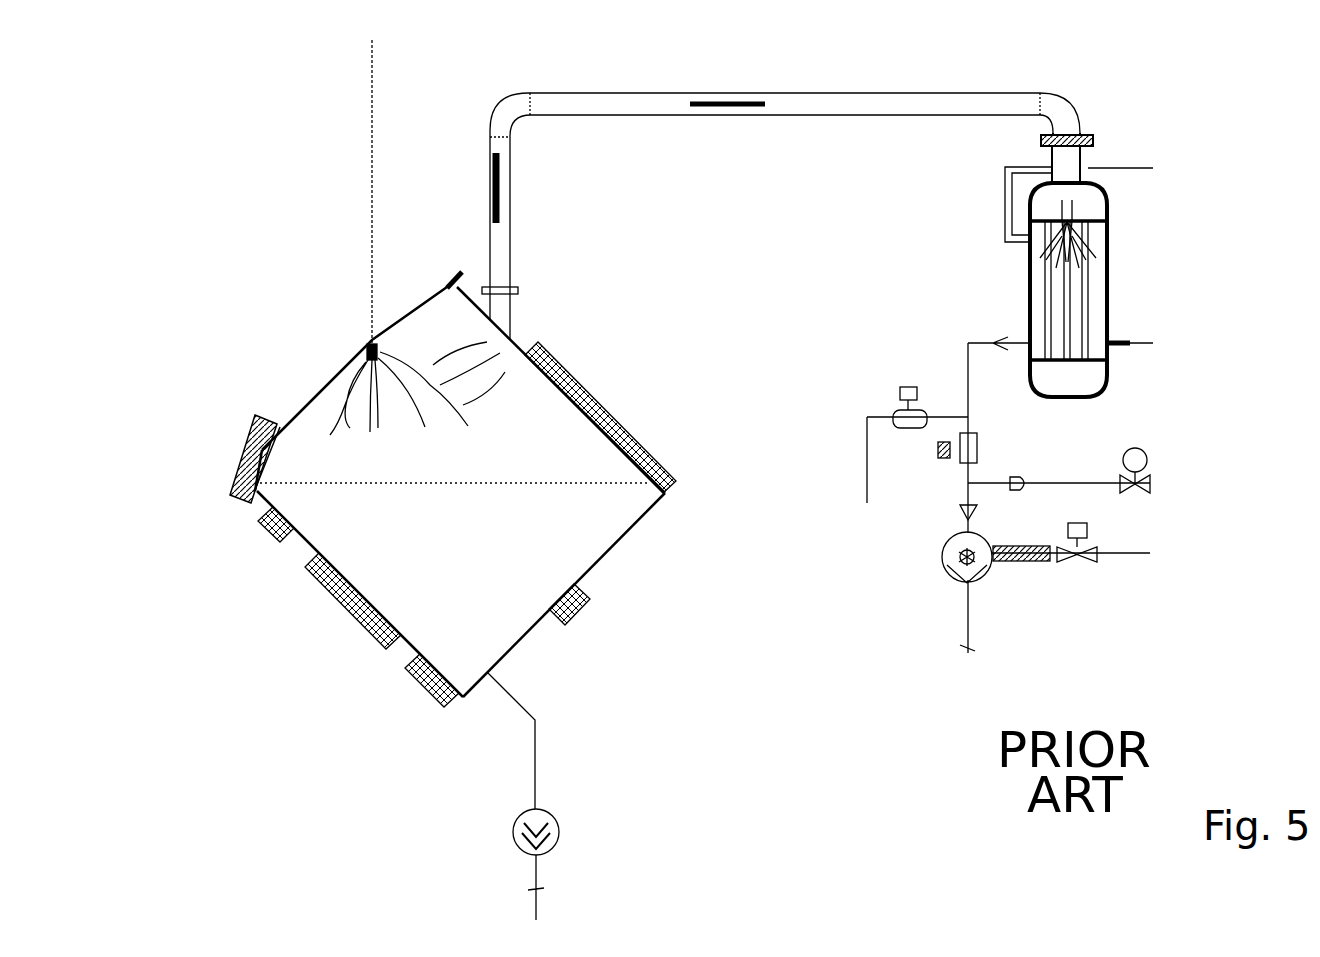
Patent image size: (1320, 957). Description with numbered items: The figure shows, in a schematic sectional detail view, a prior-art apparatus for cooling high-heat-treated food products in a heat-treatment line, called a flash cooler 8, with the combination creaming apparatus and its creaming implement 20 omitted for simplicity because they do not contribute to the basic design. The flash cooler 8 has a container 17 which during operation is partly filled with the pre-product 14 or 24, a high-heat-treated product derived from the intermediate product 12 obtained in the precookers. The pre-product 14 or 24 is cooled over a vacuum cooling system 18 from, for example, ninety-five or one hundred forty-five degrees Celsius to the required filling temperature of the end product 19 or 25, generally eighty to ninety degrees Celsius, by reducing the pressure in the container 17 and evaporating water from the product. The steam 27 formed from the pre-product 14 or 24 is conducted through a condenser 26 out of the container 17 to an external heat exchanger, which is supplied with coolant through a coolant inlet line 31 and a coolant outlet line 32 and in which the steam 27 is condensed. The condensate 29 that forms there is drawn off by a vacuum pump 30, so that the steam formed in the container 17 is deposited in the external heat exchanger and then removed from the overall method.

The flash cooler 8 is at (818, 788).
The intermediate product 12 is at (203, 190).
The pre-product 14 is at (242, 430).
The container 17 is at (636, 533).
The vacuum cooling system 18 is at (576, 54).
The end product 19 is at (476, 818).
The creaming implement 20 is at (1178, 246).
The pre-product 24 is at (215, 442).
The end product 25 is at (543, 888).
The condenser 26 is at (816, 106).
The steam 27 is at (480, 405).
The condensate 29 is at (1020, 273).
The vacuum pump 30 is at (917, 340).
The coolant inlet line 31 is at (1153, 343).
The coolant outlet line 32 is at (1125, 168).